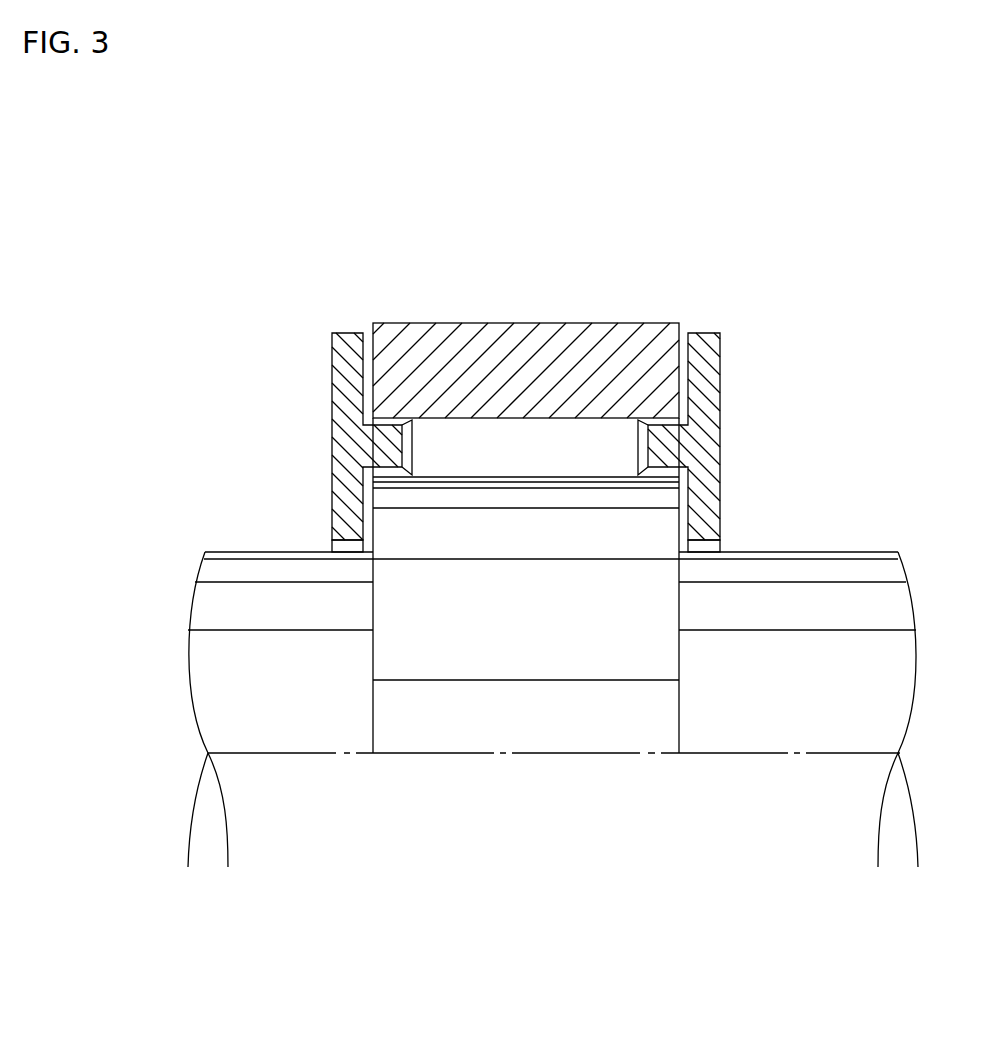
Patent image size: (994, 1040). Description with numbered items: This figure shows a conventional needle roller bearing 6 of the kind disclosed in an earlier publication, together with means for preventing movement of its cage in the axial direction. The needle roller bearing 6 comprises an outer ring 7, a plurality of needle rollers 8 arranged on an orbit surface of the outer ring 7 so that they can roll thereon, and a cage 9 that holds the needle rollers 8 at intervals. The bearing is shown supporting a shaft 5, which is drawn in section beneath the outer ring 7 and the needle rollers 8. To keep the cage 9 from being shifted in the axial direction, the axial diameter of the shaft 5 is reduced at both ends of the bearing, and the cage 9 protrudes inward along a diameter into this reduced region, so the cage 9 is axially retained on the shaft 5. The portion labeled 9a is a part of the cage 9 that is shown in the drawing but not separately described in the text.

The shaft 5 is at (832, 572).
The needle roller bearing 6 is at (235, 287).
The outer ring 7 is at (481, 338).
The needle rollers 8 is at (560, 438).
The cage 9 is at (707, 444).
The retainer ring flange 9a is at (707, 358).